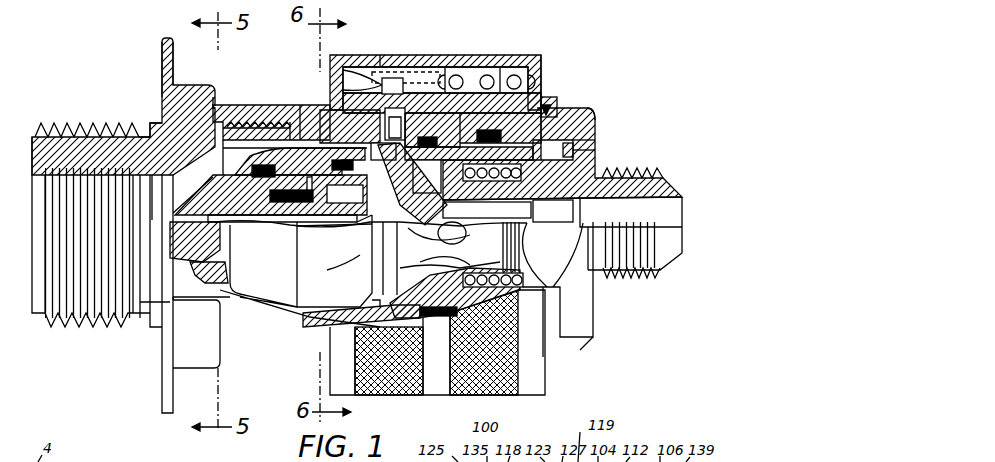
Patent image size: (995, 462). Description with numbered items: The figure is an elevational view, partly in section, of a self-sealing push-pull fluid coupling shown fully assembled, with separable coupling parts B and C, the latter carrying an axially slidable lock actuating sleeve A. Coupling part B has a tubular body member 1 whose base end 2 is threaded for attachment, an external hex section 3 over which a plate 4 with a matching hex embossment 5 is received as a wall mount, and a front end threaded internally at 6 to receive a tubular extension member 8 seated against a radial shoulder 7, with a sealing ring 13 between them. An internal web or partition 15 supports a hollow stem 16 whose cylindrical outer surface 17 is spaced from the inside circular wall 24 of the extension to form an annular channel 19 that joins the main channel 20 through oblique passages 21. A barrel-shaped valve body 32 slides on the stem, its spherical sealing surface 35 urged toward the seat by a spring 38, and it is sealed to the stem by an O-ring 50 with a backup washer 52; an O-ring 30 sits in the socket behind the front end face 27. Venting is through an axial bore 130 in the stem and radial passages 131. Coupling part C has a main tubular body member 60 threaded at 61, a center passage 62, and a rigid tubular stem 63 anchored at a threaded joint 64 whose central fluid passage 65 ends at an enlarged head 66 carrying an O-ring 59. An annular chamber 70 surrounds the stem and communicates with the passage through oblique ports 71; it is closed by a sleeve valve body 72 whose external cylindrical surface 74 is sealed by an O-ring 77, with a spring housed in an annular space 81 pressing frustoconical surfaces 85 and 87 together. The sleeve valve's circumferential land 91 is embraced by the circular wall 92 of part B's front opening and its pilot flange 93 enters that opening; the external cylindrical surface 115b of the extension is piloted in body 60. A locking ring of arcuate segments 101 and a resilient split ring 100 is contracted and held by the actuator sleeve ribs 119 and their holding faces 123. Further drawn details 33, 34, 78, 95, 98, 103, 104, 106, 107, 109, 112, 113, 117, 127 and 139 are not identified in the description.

The tubular body member 1 is at (140, 140).
The base end 2 is at (62, 126).
The external hex section 3 is at (162, 115).
The plate 4 is at (164, 68).
The hex embossment 5 is at (207, 90).
The internal threads 6 is at (250, 120).
The radial shoulder 7 is at (302, 105).
The tubular extension member 8 is at (395, 127).
The sealing ring 13 is at (228, 105).
The internal web or partition 15 is at (178, 200).
The hollow stem 16 is at (255, 222).
The cylindrical outer surface 17 is at (302, 155).
The annular channel 19 is at (240, 162).
The main channel 20 is at (98, 209).
The oblique passages 21 is at (175, 187).
The inside circular wall 24 is at (262, 124).
The front end face 27 is at (463, 119).
The O-ring 30 is at (479, 169).
The barrel-shaped valve body 32 is at (286, 150).
The bore 33 is at (350, 126).
The passage 34 is at (362, 123).
The spherical sealing surface 35 is at (330, 262).
The spring 38 is at (287, 225).
The O-ring 50 is at (271, 198).
The backup washer 52 is at (488, 127).
The O-ring 59 is at (345, 194).
The main tubular body member 60 is at (596, 117).
The threads 61 is at (633, 278).
The center passage 62 is at (648, 220).
The tubular stem 63 is at (530, 225).
The threaded joint 64 is at (553, 211).
The central fluid passage 65 is at (487, 210).
The enlarged head 66 is at (358, 228).
The annular chamber 70 is at (422, 262).
The oblique ports 71 is at (466, 238).
The sleeve valve body 72 is at (445, 254).
The external cylindrical surface 74 is at (557, 133).
The O-ring 77 is at (524, 107).
The threads 78 is at (595, 167).
The annular space 81 is at (412, 184).
The frustoconical surface 85 is at (561, 202).
The frustoconical surface 87 is at (380, 275).
The circumferential land 91 is at (432, 130).
The circular wall 92 is at (469, 153).
The pilot flange 93 is at (427, 176).
The lip 95 is at (557, 102).
The ball 98 is at (478, 60).
The resilient split ring 100 is at (383, 152).
The arcuate segments 101 is at (372, 75).
The ball 103 is at (458, 68).
The ball 104 is at (515, 68).
The wall 106 is at (543, 88).
The corner 107 is at (580, 104).
The shoulder 109 is at (563, 127).
The spacer 112 is at (503, 62).
The ball 113 is at (492, 68).
The external cylindrical surface 115b is at (375, 75).
The wall 117 is at (535, 62).
The actuator sleeve ribs 119 is at (388, 90).
The holding faces 123 is at (393, 78).
The wall 127 is at (420, 62).
The axial bore 130 is at (334, 240).
The radial passages 131 is at (210, 170).
The face 139 is at (545, 70).
The lock actuating sleeve A is at (527, 395).
The coupling part B is at (129, 349).
The coupling part C is at (620, 311).